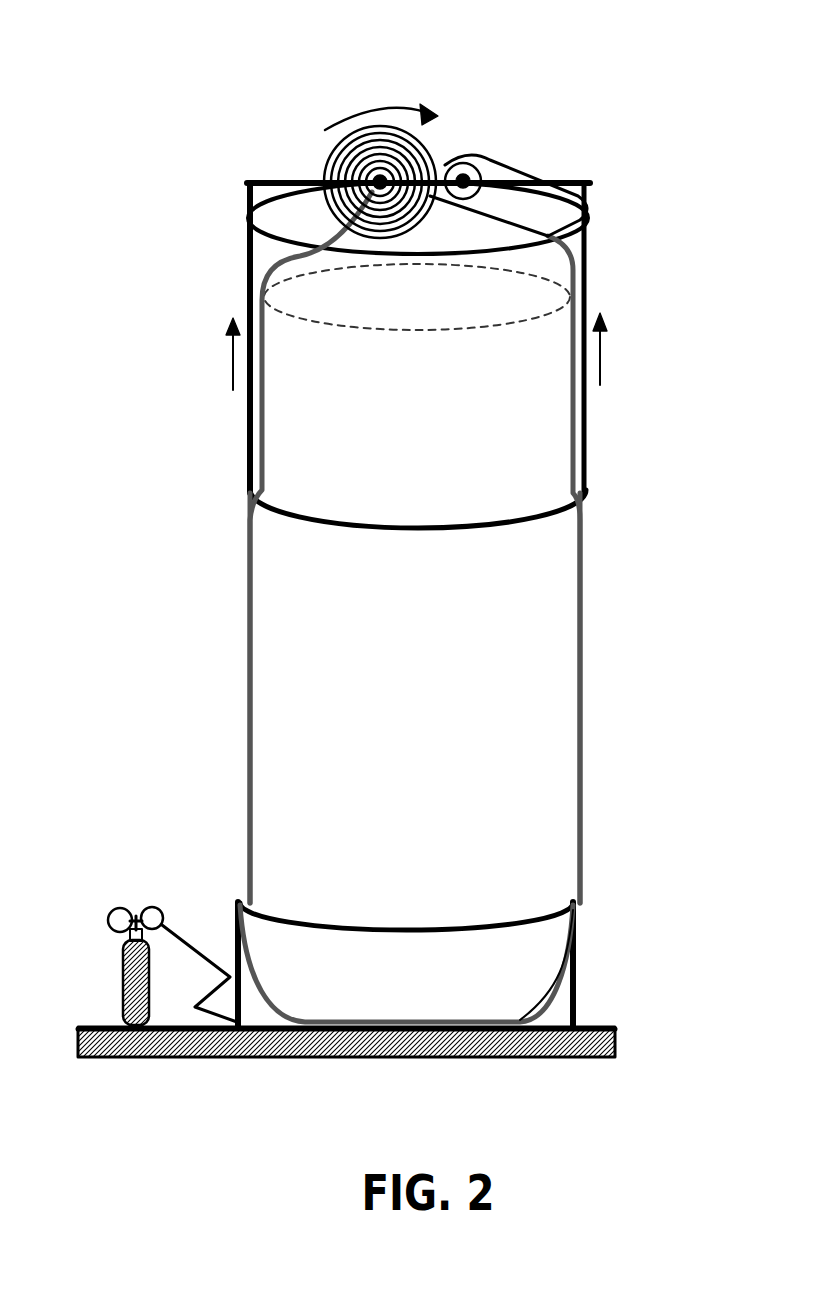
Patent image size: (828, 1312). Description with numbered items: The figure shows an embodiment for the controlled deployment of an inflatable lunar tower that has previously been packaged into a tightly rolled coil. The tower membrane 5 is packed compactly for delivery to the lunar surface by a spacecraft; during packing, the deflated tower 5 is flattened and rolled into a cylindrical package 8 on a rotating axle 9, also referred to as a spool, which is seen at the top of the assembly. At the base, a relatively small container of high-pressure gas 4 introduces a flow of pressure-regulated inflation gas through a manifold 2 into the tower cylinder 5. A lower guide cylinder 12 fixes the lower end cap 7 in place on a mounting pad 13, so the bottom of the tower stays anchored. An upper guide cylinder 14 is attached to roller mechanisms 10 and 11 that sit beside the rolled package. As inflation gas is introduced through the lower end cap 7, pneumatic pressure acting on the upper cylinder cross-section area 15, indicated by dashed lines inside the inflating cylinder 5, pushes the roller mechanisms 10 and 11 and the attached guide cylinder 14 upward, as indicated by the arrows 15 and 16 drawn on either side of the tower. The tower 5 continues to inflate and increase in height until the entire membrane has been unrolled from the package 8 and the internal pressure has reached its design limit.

The manifold 2 is at (180, 937).
The container of high-pressure gas 4 is at (120, 985).
The tower cylinder 5 is at (250, 732).
The lower end cap 7 is at (553, 990).
The cylindrical package 8 is at (335, 165).
The rotating axle 9 is at (262, 300).
The roller mechanism 10 is at (430, 140).
The roller mechanism 11 is at (470, 162).
The lower guide cylinder 12 is at (575, 945).
The mounting pad 13 is at (615, 1040).
The upper guide cylinder 14 is at (528, 522).
The upper cylinder cross-section area 15 is at (370, 332).
The arrow 16 is at (233, 362).